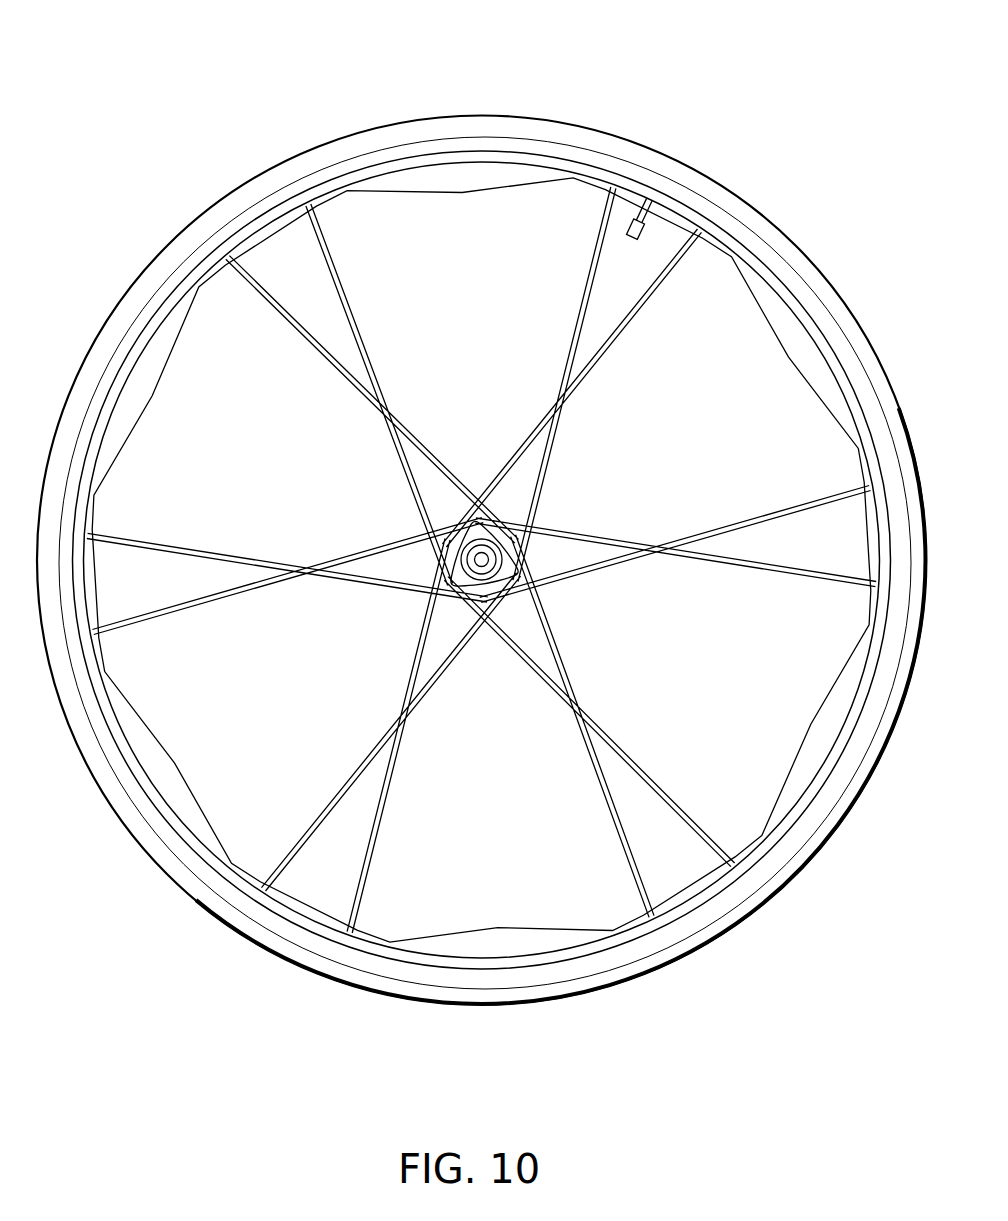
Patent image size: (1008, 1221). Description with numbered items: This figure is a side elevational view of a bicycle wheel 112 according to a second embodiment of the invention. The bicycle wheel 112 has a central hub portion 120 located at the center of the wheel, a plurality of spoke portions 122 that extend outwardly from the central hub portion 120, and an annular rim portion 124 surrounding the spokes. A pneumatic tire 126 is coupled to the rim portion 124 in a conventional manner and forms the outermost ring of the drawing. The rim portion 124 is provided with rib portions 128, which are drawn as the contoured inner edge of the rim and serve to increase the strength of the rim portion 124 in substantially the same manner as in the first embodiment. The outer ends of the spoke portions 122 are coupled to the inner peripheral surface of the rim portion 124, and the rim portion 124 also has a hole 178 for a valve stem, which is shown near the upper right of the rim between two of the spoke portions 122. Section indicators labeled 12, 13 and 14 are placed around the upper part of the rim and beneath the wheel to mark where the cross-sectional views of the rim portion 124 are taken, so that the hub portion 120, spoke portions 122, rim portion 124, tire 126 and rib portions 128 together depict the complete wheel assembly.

The section line 12- 12 is at (455, 105).
The section line 13- 13 is at (365, 115).
The section line 14- 14 is at (283, 157).
The bicycle wheel 112 is at (335, 122).
The central hub portion 120 is at (563, 500).
The spoke portions 122 is at (368, 320).
The annular rim portion 124 is at (619, 158).
The pneumatic tire 126 is at (545, 113).
The rib portions 128 is at (454, 195).
The hole for a valve stem 178 is at (644, 214).